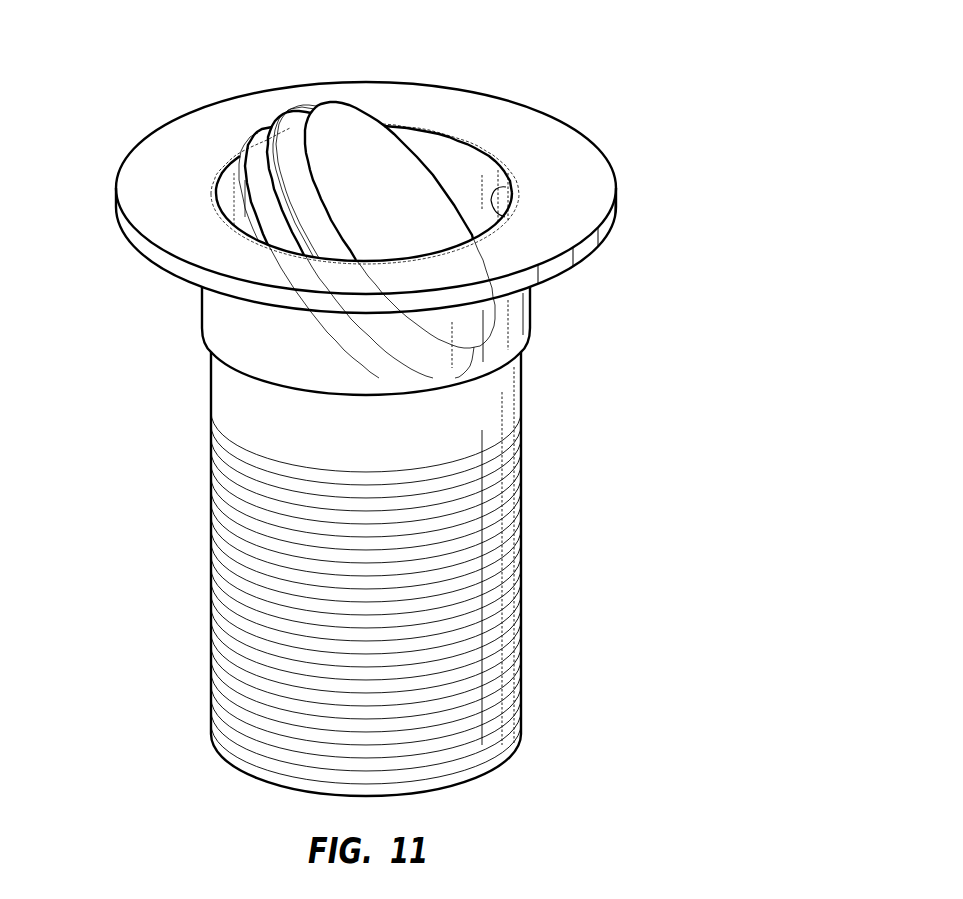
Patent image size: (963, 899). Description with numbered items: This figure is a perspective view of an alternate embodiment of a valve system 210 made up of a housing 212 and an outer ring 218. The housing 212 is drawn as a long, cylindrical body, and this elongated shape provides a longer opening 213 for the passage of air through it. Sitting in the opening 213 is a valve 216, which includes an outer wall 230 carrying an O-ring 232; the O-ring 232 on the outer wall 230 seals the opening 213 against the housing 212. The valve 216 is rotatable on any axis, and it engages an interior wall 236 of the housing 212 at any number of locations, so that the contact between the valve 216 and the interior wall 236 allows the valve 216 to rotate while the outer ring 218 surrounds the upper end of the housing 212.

The valve system 210 is at (430, 403).
The housing 212 is at (505, 410).
The opening 213 is at (453, 172).
The valve 216 is at (297, 133).
The outer ring 218 is at (532, 140).
The outer wall 230 is at (273, 220).
The O-ring 232 is at (280, 162).
The interior wall 236 is at (495, 205).